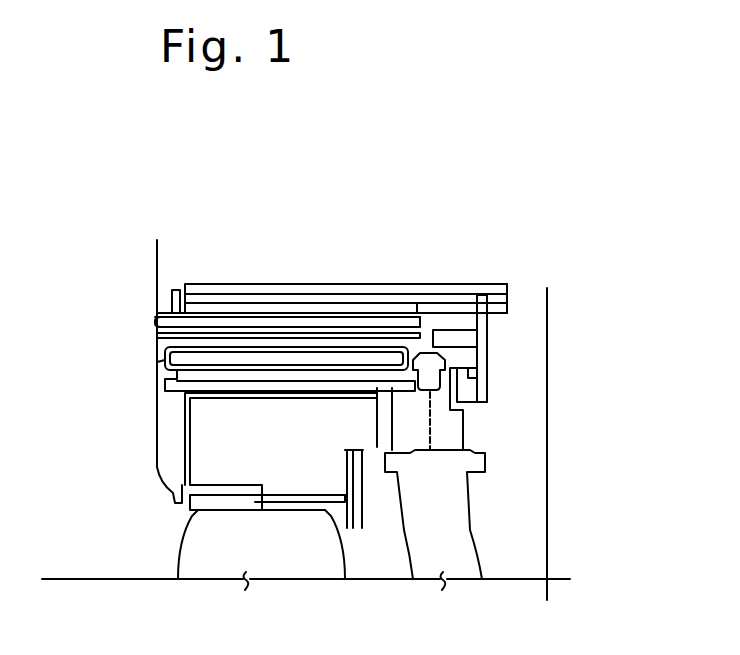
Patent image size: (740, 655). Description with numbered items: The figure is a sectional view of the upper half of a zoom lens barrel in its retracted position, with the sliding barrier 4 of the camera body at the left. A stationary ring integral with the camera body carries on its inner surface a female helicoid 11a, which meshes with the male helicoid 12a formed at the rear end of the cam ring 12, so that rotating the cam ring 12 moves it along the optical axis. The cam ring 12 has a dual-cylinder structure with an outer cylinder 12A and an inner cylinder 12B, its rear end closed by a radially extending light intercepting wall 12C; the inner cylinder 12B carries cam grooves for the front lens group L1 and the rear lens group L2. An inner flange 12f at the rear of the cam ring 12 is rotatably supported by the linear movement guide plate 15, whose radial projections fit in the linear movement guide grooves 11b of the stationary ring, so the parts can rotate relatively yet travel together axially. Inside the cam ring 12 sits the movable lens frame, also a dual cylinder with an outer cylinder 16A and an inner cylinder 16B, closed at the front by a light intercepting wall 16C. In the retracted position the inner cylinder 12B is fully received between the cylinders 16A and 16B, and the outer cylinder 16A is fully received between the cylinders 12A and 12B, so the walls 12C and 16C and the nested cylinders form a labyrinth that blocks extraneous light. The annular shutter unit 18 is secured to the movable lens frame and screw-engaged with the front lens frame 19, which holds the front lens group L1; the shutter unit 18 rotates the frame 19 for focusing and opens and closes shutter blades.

The sliding barrier 4 is at (157, 258).
The female helicoid 11a is at (347, 312).
The linear movement guide grooves 11b is at (495, 300).
The cam ring 12 is at (290, 233).
The outer cylinder 12A is at (213, 323).
The inner cylinder 12B is at (258, 357).
The male helicoid 12a is at (437, 308).
The light intercepting wall 12C is at (432, 336).
The inner flange 12f is at (473, 372).
The linear movement guide plate 15 is at (505, 354).
The outer cylinder 16A is at (183, 340).
The inner cylinder 16B is at (203, 381).
The light intercepting wall 16C is at (157, 362).
The shutter unit 18 is at (212, 442).
The front lens frame 19 is at (200, 507).
The front lens group L1 is at (261, 567).
The rear lens group L2 is at (435, 537).